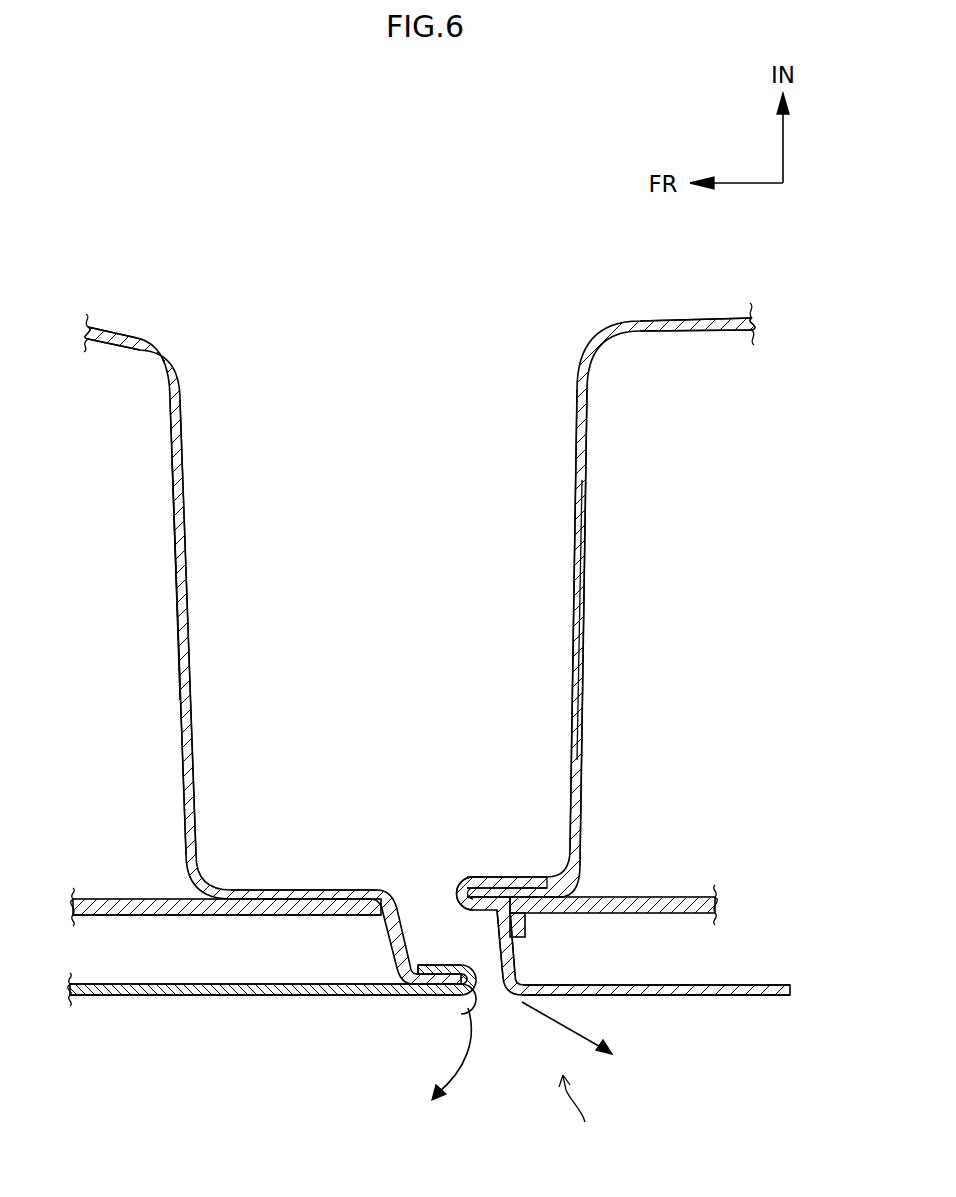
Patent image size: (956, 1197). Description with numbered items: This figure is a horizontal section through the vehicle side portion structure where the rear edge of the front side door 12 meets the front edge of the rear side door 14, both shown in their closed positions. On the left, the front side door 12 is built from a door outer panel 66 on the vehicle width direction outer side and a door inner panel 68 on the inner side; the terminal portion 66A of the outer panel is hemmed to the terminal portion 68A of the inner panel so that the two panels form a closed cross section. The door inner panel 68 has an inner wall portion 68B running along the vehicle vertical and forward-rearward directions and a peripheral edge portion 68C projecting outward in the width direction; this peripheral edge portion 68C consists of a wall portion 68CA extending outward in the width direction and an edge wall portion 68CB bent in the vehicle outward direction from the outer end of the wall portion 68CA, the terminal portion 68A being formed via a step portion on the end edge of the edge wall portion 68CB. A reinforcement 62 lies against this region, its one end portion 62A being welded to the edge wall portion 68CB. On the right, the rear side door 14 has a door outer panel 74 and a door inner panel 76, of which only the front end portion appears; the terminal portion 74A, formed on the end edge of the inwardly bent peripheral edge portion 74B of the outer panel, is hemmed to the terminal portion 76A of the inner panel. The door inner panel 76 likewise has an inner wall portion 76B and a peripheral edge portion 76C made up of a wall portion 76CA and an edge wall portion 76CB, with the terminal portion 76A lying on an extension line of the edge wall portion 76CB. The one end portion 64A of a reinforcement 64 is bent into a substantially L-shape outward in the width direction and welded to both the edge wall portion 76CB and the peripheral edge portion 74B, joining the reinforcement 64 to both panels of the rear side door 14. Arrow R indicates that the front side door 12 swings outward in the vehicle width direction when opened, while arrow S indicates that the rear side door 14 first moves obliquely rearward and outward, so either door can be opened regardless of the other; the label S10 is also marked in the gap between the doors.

The front side door 12 is at (200, 1027).
The rear side door 14 is at (710, 1023).
The reinforcement 62 is at (129, 918).
The one end portion 62A is at (273, 913).
The reinforcement 64 is at (625, 917).
The one end portion 64A is at (548, 912).
The door outer panel 66 is at (166, 997).
The terminal portion 66A is at (438, 988).
The door inner panel 68 is at (180, 425).
The terminal portion 68A is at (440, 972).
The inner wall portion 68B is at (135, 332).
The peripheral edge portion 68C is at (190, 725).
The wall portion 68CA is at (186, 648).
The edge wall portion 68CB is at (300, 889).
The door outer panel 74 is at (668, 999).
The terminal portion 74A is at (502, 888).
The peripheral edge portion 74B is at (518, 958).
The door inner panel 76 is at (571, 483).
The terminal portion 76A is at (485, 888).
The inner wall portion 76B is at (684, 318).
The peripheral edge portion 76C is at (583, 616).
The wall portion 76CA is at (581, 694).
The edge wall portion 76CB is at (542, 878).
The direction of arrow R is at (478, 1050).
The direction of arrow S is at (578, 1037).
The gap space S10 is at (586, 1112).